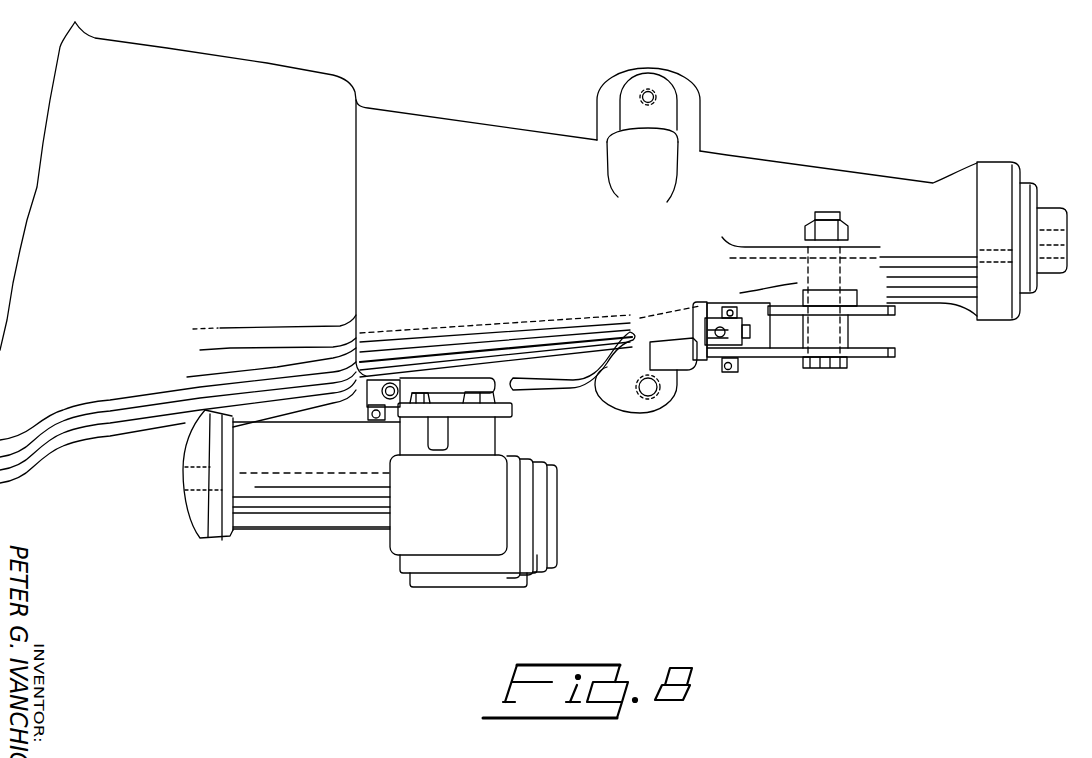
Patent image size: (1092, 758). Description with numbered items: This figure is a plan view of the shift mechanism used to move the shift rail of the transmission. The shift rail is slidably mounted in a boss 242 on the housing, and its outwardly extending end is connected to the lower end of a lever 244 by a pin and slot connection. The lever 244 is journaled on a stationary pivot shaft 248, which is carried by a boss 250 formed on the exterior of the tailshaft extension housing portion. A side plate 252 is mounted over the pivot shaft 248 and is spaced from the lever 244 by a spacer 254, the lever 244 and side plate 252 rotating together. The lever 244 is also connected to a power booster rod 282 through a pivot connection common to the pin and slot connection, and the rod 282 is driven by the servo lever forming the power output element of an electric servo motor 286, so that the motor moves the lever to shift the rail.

The boss 242 is at (663, 363).
The lever 244 is at (780, 352).
The stationary pivot shaft 248 is at (825, 368).
The boss 250 is at (867, 268).
The side plate 252 is at (867, 320).
The spacer 254 is at (857, 333).
The power booster rod 282 is at (578, 377).
The electric servo motor 286 is at (306, 507).